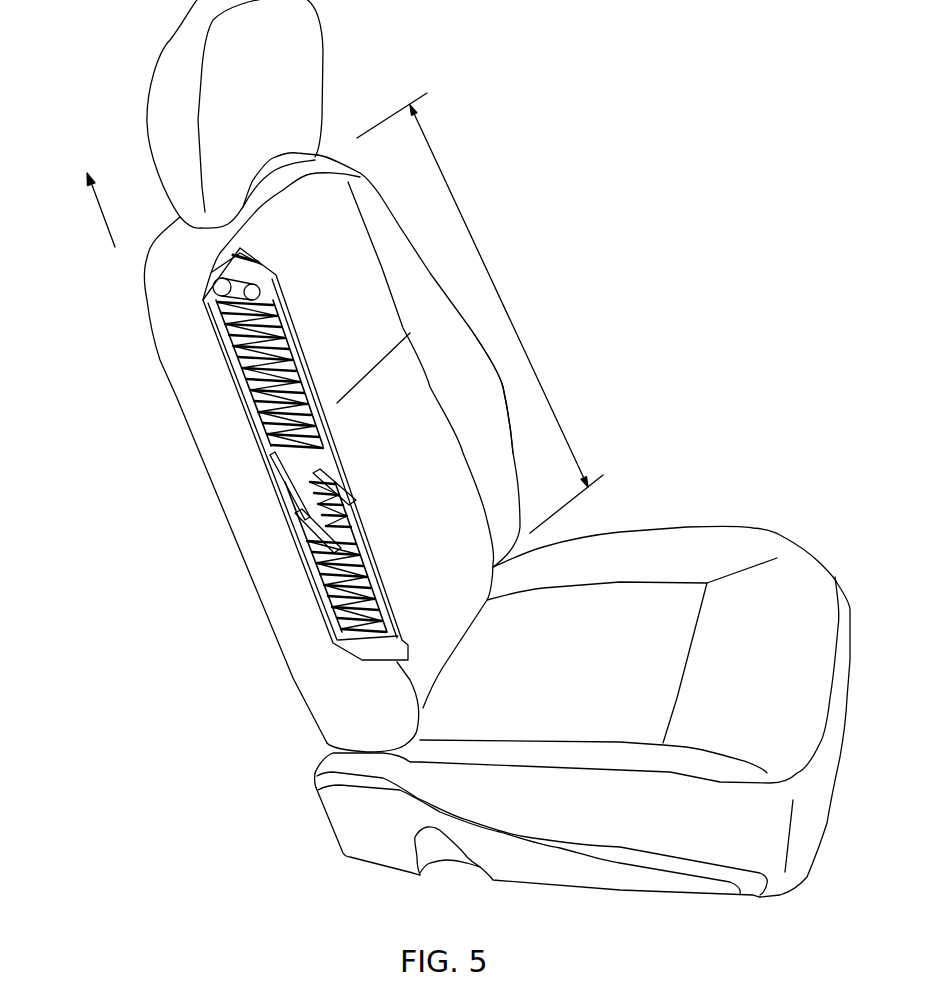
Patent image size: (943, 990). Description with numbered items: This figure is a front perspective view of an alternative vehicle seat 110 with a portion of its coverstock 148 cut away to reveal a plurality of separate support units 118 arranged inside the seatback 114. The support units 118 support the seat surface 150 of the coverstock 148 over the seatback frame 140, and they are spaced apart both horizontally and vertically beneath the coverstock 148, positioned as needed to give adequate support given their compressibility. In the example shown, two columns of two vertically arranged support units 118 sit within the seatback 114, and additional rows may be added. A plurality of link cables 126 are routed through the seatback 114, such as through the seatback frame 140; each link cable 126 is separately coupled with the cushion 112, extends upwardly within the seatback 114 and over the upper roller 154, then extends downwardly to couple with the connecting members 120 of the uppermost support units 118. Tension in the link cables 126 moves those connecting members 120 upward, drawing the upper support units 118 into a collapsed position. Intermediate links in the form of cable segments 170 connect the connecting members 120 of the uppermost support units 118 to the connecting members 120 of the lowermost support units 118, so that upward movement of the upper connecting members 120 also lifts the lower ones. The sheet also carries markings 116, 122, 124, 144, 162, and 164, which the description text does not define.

The vehicle seat 110 is at (382, 114).
The cushion 112 is at (788, 512).
The seatback 114 is at (384, 176).
The seat back height 116 is at (515, 328).
The support units 118 is at (282, 288).
The connecting members 120 is at (222, 398).
The frame 122 is at (207, 312).
The connector 124 is at (313, 533).
The link cables 126 is at (268, 278).
The seatback frame 140 is at (280, 475).
The upward direction 144 is at (102, 218).
The coverstock 148 is at (402, 268).
The seat surface 150 is at (431, 426).
The upper roller 154 is at (245, 265).
The side rail 162 is at (262, 448).
The side rail 164 is at (323, 437).
The cable segments 170 is at (307, 517).